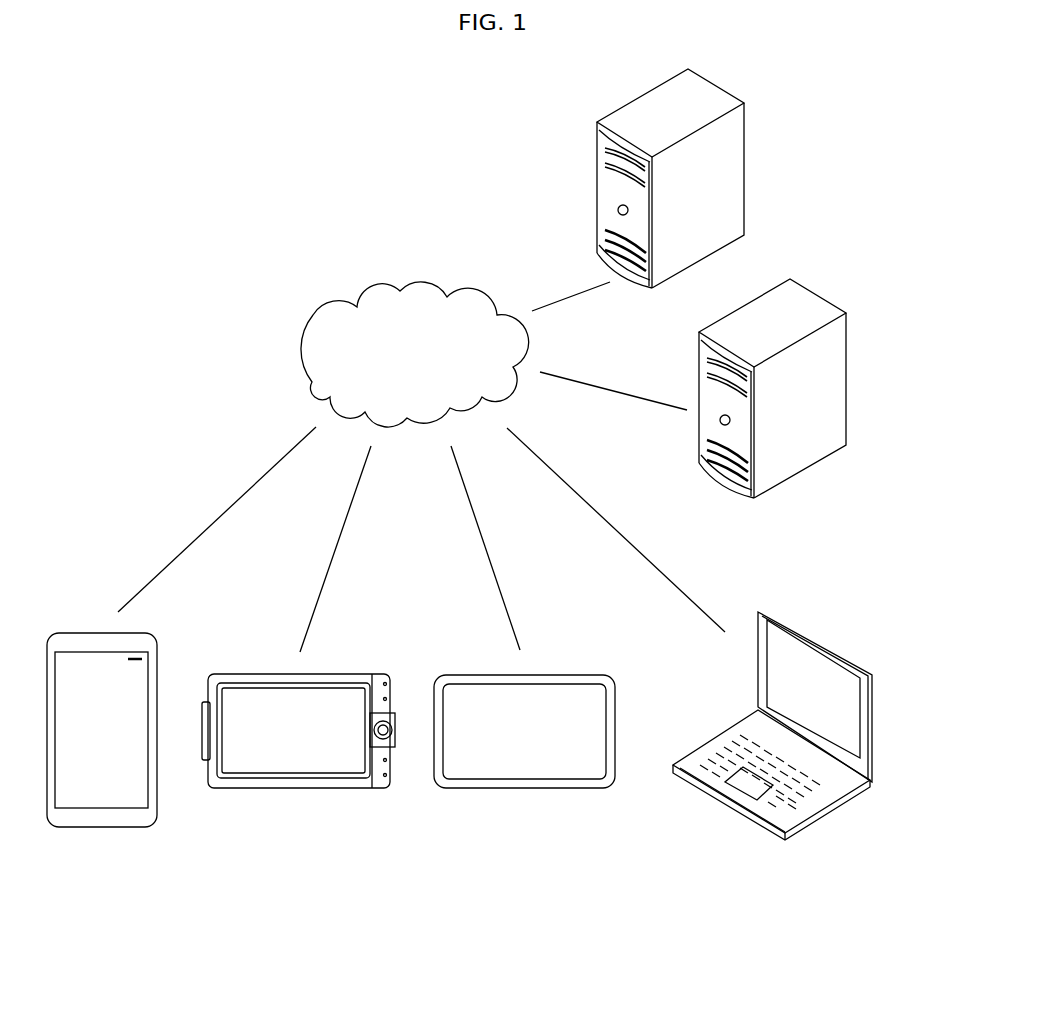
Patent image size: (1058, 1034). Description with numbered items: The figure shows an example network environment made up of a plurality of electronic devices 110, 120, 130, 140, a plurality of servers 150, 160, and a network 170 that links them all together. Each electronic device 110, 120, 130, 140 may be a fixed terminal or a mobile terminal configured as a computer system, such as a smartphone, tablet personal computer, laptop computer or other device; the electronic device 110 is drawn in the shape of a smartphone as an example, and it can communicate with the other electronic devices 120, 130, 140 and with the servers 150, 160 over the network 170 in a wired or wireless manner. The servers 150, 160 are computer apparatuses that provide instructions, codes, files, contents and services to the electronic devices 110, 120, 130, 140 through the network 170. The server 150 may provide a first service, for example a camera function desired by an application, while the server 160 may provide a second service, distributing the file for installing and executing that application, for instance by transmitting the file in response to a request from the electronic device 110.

The electronic device 110 is at (100, 827).
The electronic device 120 is at (300, 788).
The electronic device 130 is at (525, 788).
The electronic device 140 is at (872, 730).
The server 150 is at (846, 378).
The server 160 is at (745, 165).
The network 170 is at (418, 280).